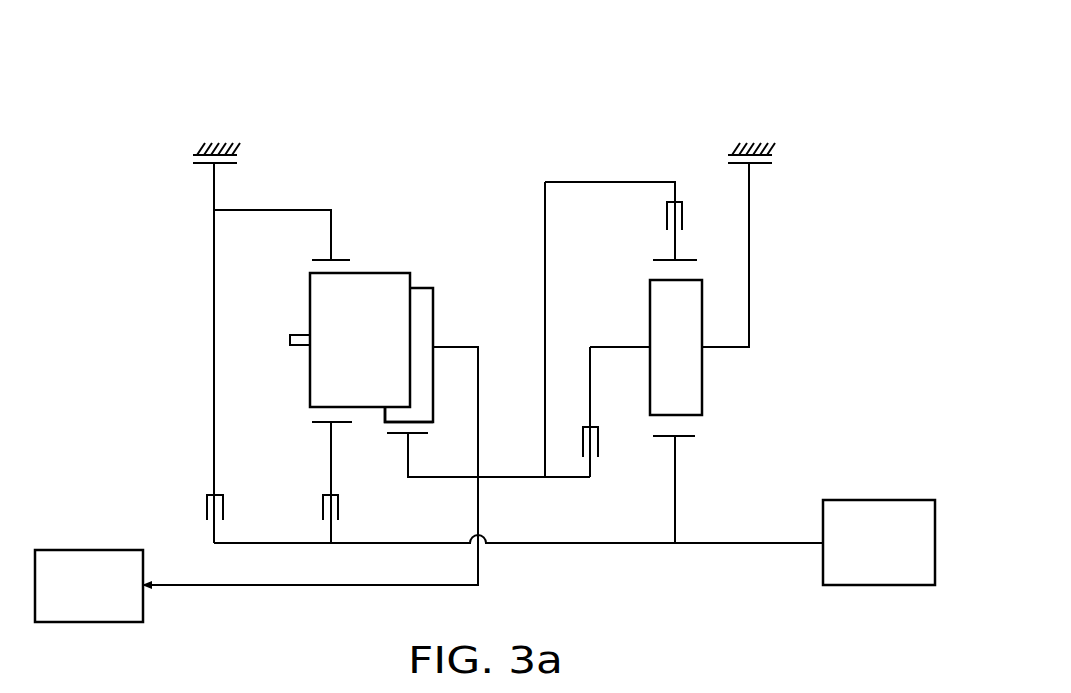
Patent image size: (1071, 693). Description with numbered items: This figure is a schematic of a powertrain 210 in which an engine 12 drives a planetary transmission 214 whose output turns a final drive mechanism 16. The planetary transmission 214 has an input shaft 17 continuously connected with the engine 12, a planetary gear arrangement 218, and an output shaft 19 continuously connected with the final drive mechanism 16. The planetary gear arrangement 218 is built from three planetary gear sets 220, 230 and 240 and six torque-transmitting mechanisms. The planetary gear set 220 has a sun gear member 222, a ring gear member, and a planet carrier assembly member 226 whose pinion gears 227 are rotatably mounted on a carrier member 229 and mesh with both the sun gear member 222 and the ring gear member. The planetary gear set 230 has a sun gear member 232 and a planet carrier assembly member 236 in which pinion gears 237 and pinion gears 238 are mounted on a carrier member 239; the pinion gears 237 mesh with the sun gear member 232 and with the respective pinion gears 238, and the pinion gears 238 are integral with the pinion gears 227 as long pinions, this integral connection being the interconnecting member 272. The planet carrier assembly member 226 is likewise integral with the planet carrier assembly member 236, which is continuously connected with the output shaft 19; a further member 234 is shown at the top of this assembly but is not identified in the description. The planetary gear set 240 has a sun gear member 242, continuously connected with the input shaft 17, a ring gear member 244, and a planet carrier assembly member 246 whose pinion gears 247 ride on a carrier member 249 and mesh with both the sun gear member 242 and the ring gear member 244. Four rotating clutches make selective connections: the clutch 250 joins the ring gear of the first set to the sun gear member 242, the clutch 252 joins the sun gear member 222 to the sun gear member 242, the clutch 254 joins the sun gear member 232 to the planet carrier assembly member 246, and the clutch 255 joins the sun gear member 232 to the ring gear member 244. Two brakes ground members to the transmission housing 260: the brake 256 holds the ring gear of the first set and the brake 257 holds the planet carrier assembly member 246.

The engine 12 is at (858, 485).
The final drive mechanism 16 is at (102, 530).
The input shaft 17 is at (783, 545).
The output shaft 19 is at (184, 590).
The powertrain 210 is at (143, 290).
The planetary transmission 214 is at (428, 88).
The planetary gear arrangement 218 is at (636, 88).
The planetary gear set 220 is at (324, 428).
The sun gear member 222 is at (322, 425).
The planet carrier assembly member 226 is at (299, 330).
The pinion gears 227 is at (365, 351).
The carrier member 229 is at (296, 350).
The planetary gear set 230 is at (398, 440).
The sun gear member 232 is at (420, 438).
The connection member 234 is at (346, 258).
The planet carrier assembly member 236 is at (444, 332).
The pinion gears 237 is at (435, 380).
The pinion gears 238 is at (412, 278).
The carrier member 239 is at (478, 345).
The planetary gear set 240 is at (668, 441).
The sun gear member 242 is at (690, 438).
The ring gear member 244 is at (687, 258).
The planet carrier assembly member 246 is at (710, 362).
The pinion gears 247 is at (692, 330).
The carrier member 249 is at (708, 352).
The clutch 250 is at (232, 516).
The clutch 252 is at (346, 516).
The clutch 254 is at (578, 457).
The clutch 255 is at (665, 200).
The brake 256 is at (188, 157).
The brake 257 is at (778, 157).
The transmission housing 260 is at (200, 150).
The interconnecting member 272 is at (390, 272).